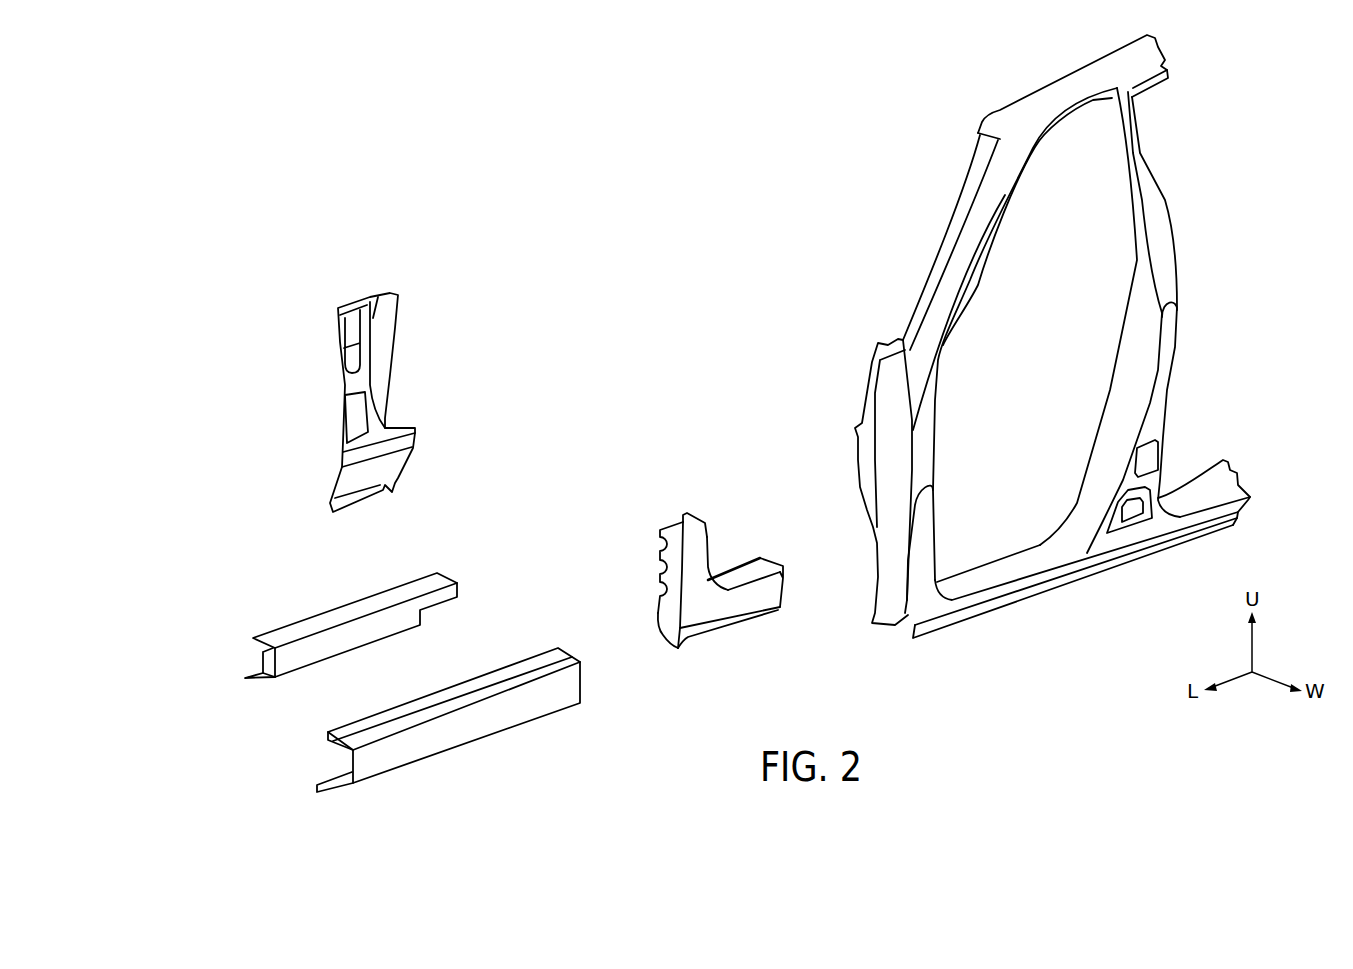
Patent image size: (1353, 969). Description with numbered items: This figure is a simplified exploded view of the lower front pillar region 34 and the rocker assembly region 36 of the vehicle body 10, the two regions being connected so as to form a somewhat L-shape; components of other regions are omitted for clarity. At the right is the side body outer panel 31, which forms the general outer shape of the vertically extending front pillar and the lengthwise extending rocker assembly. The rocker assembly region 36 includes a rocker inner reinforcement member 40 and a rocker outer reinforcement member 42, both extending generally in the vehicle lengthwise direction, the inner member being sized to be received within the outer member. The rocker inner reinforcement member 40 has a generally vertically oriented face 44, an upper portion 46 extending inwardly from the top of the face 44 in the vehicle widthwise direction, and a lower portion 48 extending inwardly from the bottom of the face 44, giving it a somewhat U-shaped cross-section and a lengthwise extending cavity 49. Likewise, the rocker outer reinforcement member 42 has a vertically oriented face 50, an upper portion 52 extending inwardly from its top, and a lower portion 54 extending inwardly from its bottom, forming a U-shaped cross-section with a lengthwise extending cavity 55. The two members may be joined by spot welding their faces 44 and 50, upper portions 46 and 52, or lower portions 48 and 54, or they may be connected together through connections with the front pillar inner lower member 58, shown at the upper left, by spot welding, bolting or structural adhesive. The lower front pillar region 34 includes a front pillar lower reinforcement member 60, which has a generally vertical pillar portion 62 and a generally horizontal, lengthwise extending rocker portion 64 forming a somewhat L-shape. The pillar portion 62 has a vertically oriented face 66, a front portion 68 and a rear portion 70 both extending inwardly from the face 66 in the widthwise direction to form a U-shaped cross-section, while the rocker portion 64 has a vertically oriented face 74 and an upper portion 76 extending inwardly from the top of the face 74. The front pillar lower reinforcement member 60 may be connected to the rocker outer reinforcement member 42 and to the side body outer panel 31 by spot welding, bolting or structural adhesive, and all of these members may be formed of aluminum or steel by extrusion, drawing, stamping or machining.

The vehicle body 10 is at (1238, 120).
The side body outer panel 31 is at (1017, 588).
The lower front pillar region 34 is at (880, 641).
The rocker assembly region 36 is at (1000, 645).
The front pillar inner lower member 58 is at (308, 379).
The rocker inner reinforcement member 40 is at (455, 560).
The face 44 is at (333, 650).
The upper portion 46 is at (333, 617).
The lower portion 48 is at (258, 681).
The cavity 49 is at (243, 657).
The rocker outer reinforcement member 42 is at (448, 773).
The face 50 is at (522, 717).
The upper portion 52 is at (528, 669).
The lower portion 54 is at (343, 788).
The cavity 55 is at (322, 765).
The front pillar lower reinforcement member 60 is at (748, 481).
The pillar portion 62 is at (652, 550).
The rocker portion 64 is at (747, 551).
The face 66 is at (704, 543).
The front portion 68 is at (660, 611).
The rear portion 70 is at (688, 516).
The face 74 is at (745, 598).
The upper portion 76 is at (768, 572).